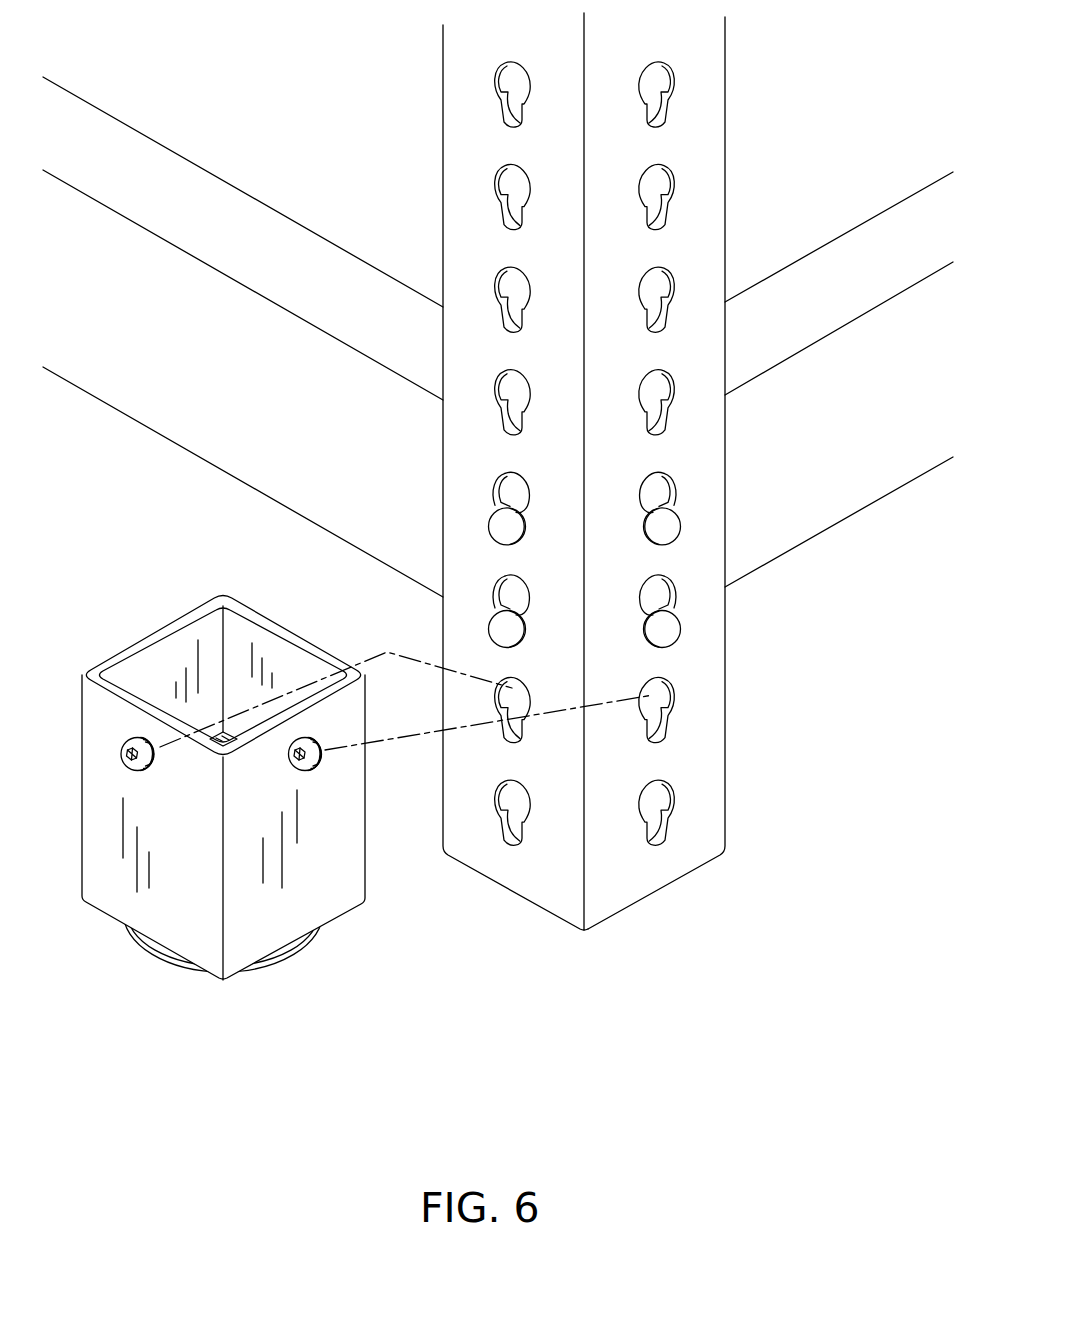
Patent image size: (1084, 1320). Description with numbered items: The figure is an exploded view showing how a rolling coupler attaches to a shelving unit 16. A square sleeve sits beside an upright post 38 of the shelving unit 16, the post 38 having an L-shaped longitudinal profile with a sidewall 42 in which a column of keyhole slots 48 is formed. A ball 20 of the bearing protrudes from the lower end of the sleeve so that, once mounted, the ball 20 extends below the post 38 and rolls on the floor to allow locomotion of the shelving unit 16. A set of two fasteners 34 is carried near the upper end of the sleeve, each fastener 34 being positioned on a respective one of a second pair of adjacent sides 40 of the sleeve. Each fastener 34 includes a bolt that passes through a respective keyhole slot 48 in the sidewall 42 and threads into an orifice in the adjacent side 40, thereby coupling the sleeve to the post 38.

The shelving unit 16 is at (443, 203).
The post 38 is at (725, 648).
The sidewall 42 is at (698, 750).
The keyhole slot 48 is at (650, 695).
The ball 20 is at (263, 967).
The second pair of adjacent sides 40 is at (272, 892).
The fastener 34 is at (150, 765).